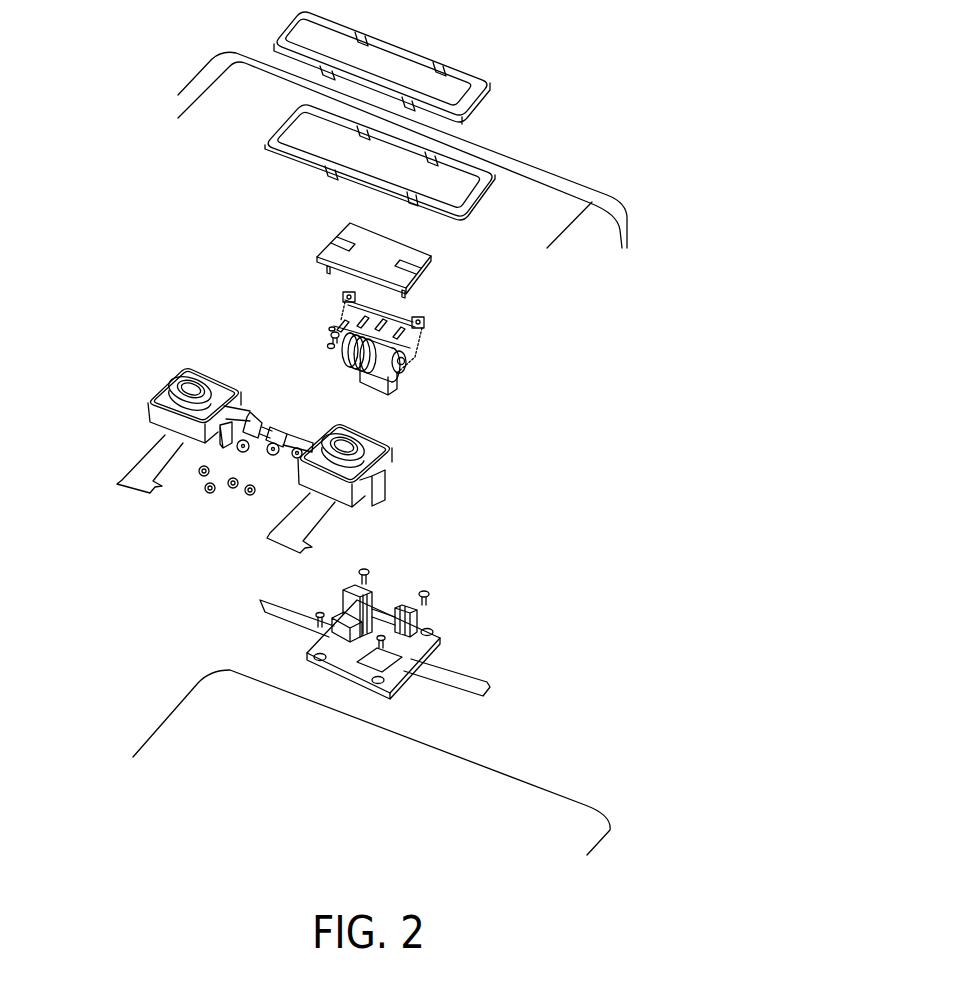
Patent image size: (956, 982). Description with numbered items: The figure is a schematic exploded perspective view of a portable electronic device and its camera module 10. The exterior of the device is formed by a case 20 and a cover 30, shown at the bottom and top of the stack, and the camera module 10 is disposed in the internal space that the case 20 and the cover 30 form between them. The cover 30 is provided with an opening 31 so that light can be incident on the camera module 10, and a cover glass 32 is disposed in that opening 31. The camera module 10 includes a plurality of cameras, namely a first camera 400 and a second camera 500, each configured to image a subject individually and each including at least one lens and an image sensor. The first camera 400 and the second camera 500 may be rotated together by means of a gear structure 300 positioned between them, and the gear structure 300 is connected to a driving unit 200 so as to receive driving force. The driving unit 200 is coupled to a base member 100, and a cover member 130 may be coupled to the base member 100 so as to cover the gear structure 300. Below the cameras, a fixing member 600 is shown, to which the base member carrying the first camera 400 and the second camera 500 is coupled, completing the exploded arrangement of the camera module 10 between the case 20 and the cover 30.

The camera module 10 is at (163, 335).
The case 20 is at (548, 812).
The cover 30 is at (553, 202).
The opening 31 is at (451, 188).
The cover glass 32 is at (466, 70).
The base member 100 is at (424, 326).
The cover member 130 is at (428, 256).
The driving unit 200 is at (380, 365).
The gear structure 300 is at (275, 412).
The first camera 400 is at (160, 392).
The second camera 500 is at (392, 452).
The fixing member 600 is at (440, 636).